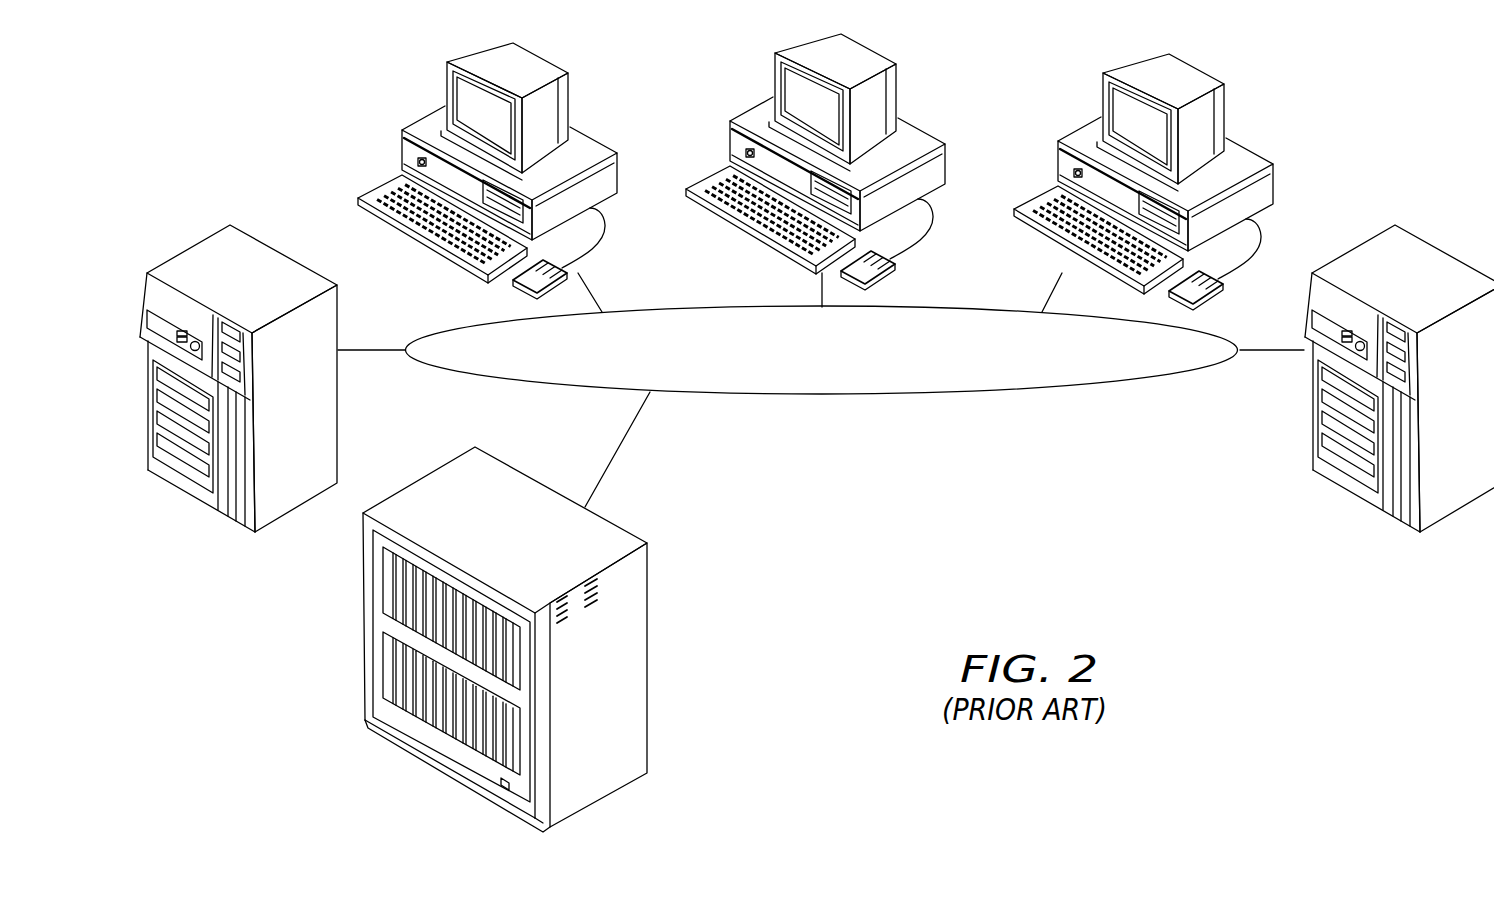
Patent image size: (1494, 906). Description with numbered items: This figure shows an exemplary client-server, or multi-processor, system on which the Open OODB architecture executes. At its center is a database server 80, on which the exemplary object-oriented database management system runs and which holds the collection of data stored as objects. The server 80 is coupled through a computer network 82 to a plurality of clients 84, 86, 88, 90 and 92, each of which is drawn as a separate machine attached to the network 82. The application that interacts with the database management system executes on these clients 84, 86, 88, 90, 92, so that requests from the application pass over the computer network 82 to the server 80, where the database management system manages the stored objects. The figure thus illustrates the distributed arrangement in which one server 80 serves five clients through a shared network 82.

The database server 80 is at (590, 788).
The computer network 82 is at (810, 377).
The client 84 is at (200, 256).
The client 86 is at (590, 144).
The client 88 is at (922, 136).
The client 90 is at (1248, 154).
The client 92 is at (1437, 257).